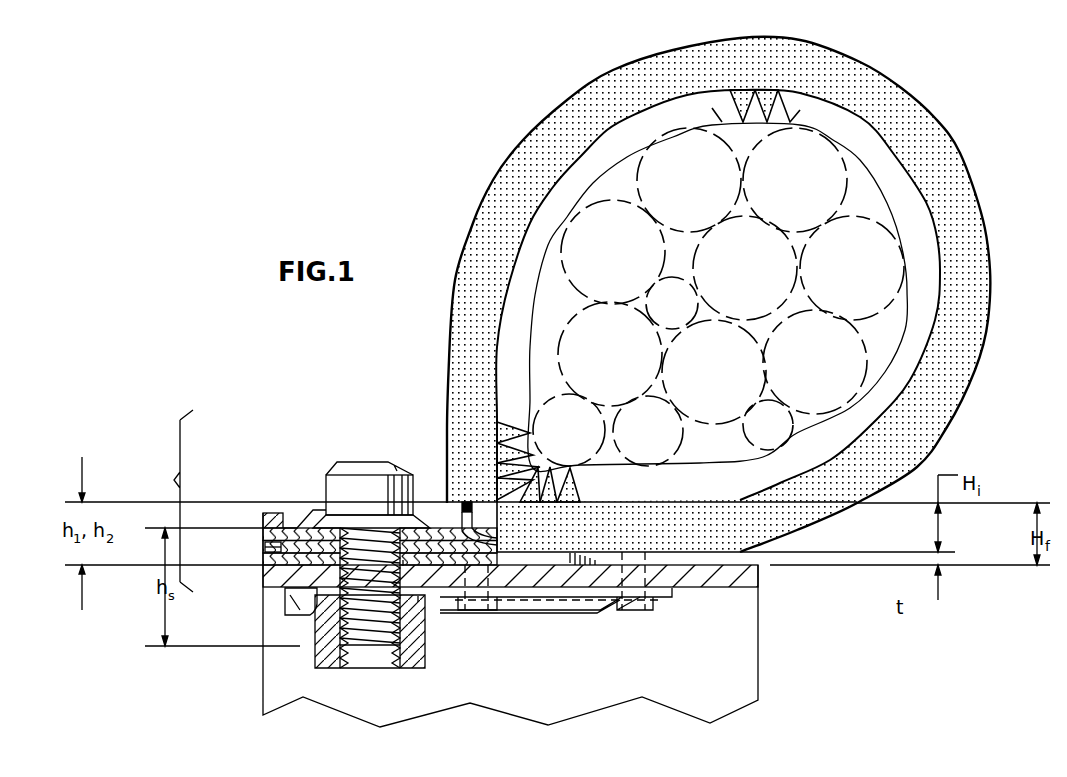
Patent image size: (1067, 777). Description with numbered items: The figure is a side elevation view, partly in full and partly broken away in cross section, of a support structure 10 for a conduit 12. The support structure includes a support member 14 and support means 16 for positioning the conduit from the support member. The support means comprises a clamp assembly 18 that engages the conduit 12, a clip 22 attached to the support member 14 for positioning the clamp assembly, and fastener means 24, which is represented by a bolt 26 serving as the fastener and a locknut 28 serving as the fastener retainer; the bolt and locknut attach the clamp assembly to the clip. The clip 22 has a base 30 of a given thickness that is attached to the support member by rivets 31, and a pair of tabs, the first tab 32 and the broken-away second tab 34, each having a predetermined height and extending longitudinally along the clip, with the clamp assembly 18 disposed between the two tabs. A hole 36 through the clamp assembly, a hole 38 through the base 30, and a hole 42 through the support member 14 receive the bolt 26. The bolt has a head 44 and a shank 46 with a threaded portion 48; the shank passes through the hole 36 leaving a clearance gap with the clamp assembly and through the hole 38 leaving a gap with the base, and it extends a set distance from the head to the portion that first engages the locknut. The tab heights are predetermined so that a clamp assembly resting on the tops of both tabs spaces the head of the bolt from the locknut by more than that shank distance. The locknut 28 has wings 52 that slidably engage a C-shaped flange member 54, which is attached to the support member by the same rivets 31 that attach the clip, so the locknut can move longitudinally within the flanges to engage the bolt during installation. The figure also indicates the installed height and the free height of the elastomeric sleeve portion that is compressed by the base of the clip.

The support structure 10 is at (300, 345).
The conduit 12 is at (855, 200).
The support member 14 is at (720, 675).
The support means 16 is at (215, 501).
The clamp assembly 18 is at (446, 384).
The clip 22 is at (263, 555).
The fastener means 24 is at (388, 458).
The bolt 26 is at (323, 475).
The locknut 28 is at (322, 662).
The base 30 is at (290, 574).
The rivets 31 is at (487, 614).
The first tab 32 is at (313, 508).
The second tab 34 is at (443, 522).
The hole 36 is at (403, 562).
The hole 38 is at (418, 598).
The hole 42 is at (300, 588).
The head 44 is at (356, 511).
The shank 46 is at (375, 530).
The threaded portion 48 is at (373, 645).
The wings 52 is at (317, 617).
The C-shaped flange member 54 is at (533, 612).